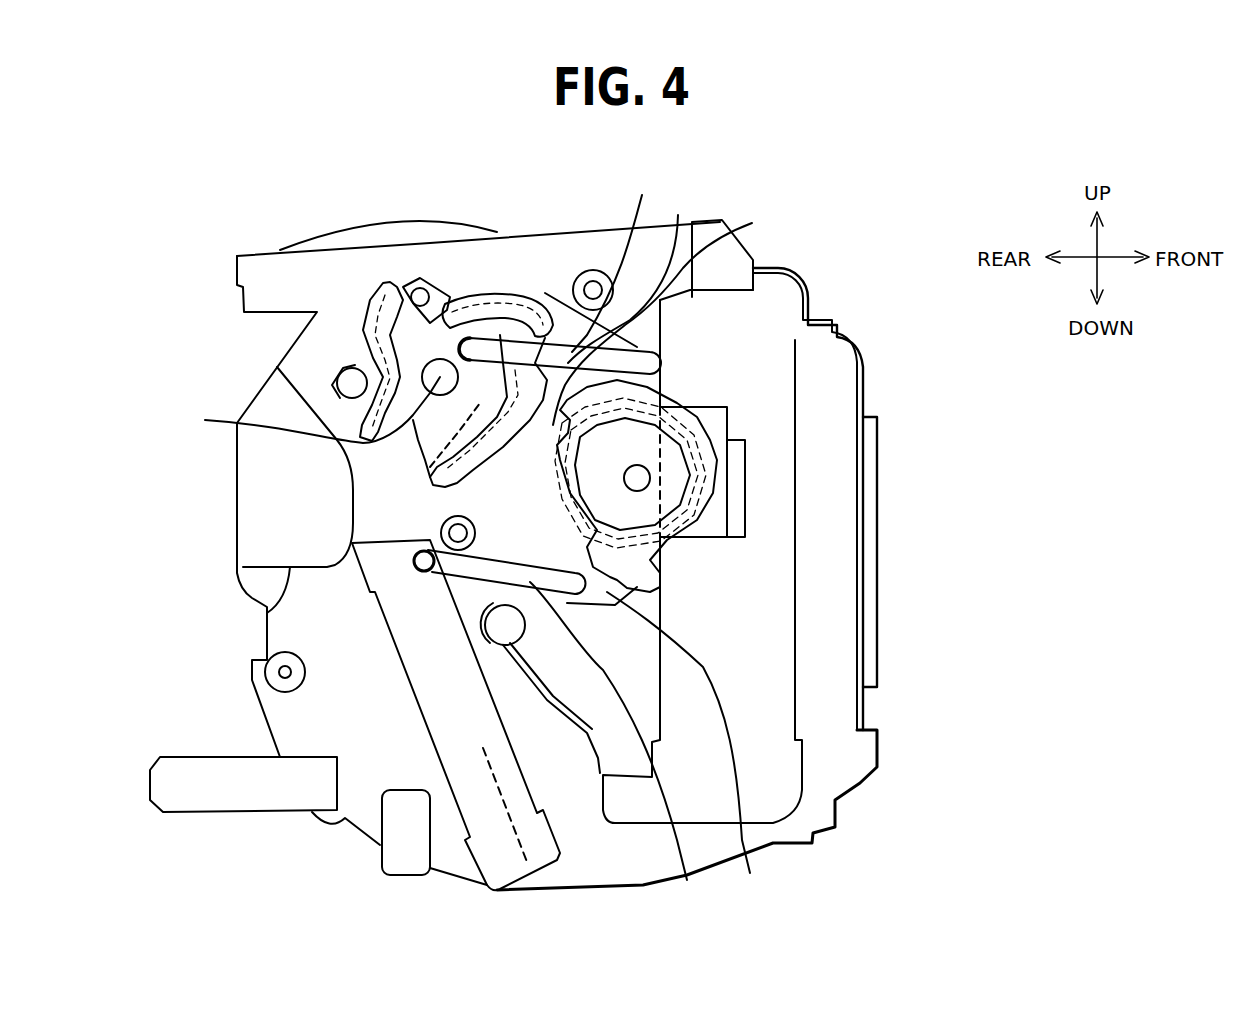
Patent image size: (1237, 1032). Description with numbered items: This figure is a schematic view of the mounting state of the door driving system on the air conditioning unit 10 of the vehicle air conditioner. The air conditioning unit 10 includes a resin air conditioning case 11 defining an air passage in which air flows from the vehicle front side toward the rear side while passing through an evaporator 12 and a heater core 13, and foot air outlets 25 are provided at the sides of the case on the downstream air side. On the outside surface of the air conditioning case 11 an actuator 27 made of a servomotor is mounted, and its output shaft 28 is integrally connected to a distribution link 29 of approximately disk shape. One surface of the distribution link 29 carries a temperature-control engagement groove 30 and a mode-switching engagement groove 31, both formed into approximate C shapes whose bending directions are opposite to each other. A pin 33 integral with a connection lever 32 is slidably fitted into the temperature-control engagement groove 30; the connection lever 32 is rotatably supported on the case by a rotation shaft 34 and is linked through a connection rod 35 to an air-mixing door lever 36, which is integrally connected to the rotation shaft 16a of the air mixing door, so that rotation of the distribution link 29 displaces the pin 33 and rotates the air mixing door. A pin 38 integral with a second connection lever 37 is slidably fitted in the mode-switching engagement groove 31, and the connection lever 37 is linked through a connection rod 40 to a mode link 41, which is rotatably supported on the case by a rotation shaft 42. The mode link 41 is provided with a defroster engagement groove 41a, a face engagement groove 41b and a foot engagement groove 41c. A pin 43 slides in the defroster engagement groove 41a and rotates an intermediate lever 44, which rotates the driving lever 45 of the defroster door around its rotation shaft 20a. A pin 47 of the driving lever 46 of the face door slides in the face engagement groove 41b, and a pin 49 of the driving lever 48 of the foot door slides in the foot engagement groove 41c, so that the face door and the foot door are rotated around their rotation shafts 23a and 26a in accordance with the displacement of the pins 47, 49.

The air conditioning unit 10 is at (862, 345).
The air conditioning case 11 is at (845, 458).
The evaporator 12 is at (748, 600).
The heater core 13 is at (530, 870).
The rotation shaft 16a is at (445, 530).
The rotation shaft 20a is at (618, 265).
The rotation shaft 23a is at (420, 288).
The foot air outlets 25 is at (267, 613).
The rotation shaft 26a is at (350, 380).
The actuator 27 is at (733, 490).
The output shaft 28 is at (650, 477).
The distribution link 29 is at (668, 392).
The temperature-control engagement groove 30 is at (473, 457).
The mode-switching engagement groove 31 is at (680, 510).
The connection lever 32 is at (689, 747).
The pin 33 is at (665, 592).
The rotation shaft 34 is at (577, 580).
The connection rod 35 is at (618, 748).
The air-mixing door lever 36 is at (430, 541).
The connection lever 37 is at (670, 317).
The pin 38 is at (640, 360).
The connection rod 40 is at (633, 277).
The mode link 41 is at (447, 413).
The defroster engagement groove 41a is at (484, 527).
The face engagement groove 41b is at (500, 300).
The foot engagement groove 41c is at (365, 333).
The rotation shaft 42 is at (305, 410).
The pin 43 is at (440, 445).
The intermediate lever 44 is at (560, 406).
The driving lever 45 is at (543, 315).
The driving lever 46 is at (458, 302).
The pin 47 is at (453, 307).
The driving lever 48 is at (350, 393).
The pin 49 is at (347, 427).